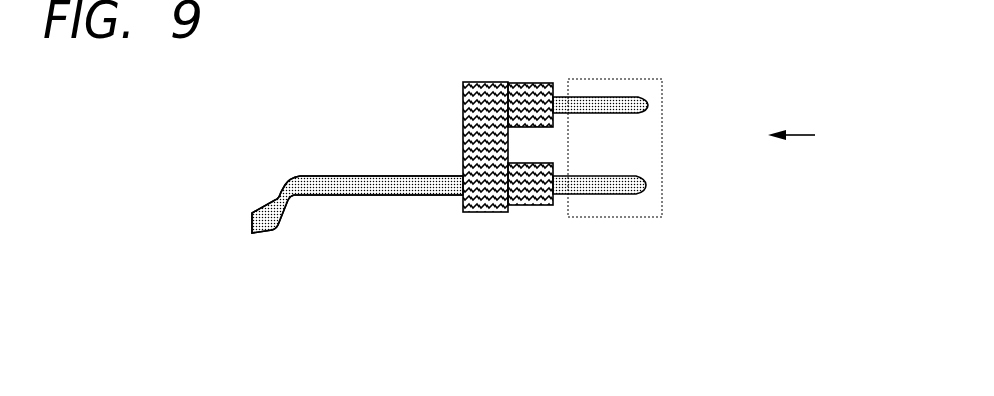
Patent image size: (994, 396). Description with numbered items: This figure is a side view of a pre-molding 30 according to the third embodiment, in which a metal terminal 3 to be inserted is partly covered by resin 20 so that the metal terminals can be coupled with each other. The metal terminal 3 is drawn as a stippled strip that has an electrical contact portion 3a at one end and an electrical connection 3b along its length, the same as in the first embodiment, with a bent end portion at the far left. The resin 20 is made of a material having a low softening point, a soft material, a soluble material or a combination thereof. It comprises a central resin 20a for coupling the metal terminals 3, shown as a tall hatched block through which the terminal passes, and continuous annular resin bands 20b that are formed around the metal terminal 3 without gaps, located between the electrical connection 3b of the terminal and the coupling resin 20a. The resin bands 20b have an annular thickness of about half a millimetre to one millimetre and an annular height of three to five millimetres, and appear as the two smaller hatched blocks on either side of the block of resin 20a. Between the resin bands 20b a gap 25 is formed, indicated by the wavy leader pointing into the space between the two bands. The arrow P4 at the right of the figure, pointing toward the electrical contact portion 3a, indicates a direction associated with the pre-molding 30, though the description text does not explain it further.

The metal terminal 3 is at (417, 183).
The electrical contact portion 3a is at (615, 105).
The electrical connection 3b is at (337, 175).
The pre-molding 30 is at (279, 196).
The resin 20 is at (502, 157).
The resin for coupling the metal terminals 20a is at (460, 193).
The continuous annular resin band 20b is at (545, 87).
The gap 25 is at (525, 147).
The pressing direction P4 is at (810, 138).